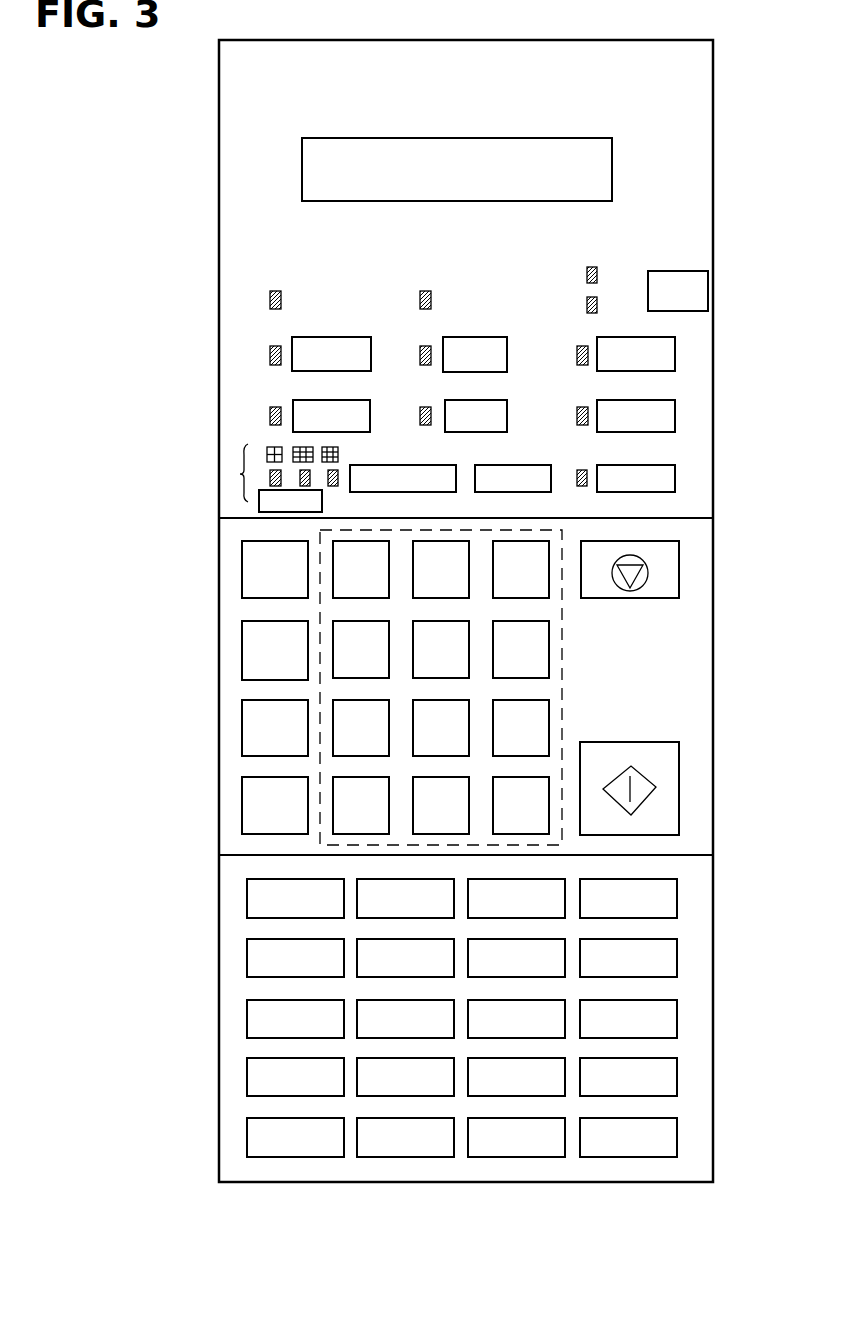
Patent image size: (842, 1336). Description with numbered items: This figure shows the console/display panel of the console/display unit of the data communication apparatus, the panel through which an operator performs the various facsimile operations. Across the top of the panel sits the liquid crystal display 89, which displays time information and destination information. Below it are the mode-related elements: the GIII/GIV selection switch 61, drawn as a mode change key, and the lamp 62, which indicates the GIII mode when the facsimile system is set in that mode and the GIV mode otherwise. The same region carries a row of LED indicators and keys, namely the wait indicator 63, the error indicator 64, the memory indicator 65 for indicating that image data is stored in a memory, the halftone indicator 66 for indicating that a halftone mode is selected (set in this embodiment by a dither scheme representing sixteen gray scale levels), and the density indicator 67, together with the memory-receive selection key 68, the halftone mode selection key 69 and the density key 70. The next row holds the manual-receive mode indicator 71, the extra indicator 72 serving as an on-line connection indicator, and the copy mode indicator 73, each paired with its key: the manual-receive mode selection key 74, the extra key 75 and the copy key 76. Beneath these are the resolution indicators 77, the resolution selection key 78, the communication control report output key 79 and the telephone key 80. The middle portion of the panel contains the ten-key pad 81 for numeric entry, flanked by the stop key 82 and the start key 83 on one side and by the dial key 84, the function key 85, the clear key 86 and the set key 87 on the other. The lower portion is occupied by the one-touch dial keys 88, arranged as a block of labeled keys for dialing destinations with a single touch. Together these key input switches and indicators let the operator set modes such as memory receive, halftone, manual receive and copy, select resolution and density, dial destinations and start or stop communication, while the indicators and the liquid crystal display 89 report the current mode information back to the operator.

The GIII/GIV selection switch 61 is at (663, 271).
The lamp 62 is at (587, 301).
The wait indicator 63 is at (426, 291).
The error indicator 64 is at (276, 291).
The memory indicator 65 is at (272, 348).
The halftone indicator 66 is at (421, 348).
The density indicator 67 is at (578, 349).
The memory-receive selection key 68 is at (312, 337).
The halftone mode selection key 69 is at (469, 337).
The density key 70 is at (650, 337).
The manual-receive mode indicator 71 is at (271, 412).
The extra indicator 72 is at (425, 407).
The copy mode indicator 73 is at (579, 412).
The manual-receive mode selection key 74 is at (327, 400).
The extra key 75 is at (480, 400).
The copy key 76 is at (651, 400).
The resolution indicators 77 is at (240, 474).
The resolution selection key 78 is at (416, 465).
The communication control report output key 79 is at (516, 465).
The telephone key 80 is at (651, 465).
The ten-key pad 81 is at (562, 663).
The stop key 82 is at (630, 598).
The start key 83 is at (652, 742).
The dial key 84 is at (242, 556).
The function key 85 is at (242, 645).
The clear key 86 is at (242, 730).
The set key 87 is at (242, 806).
The one-touch dial keys 88 is at (219, 952).
The liquid crystal display 89 is at (395, 138).